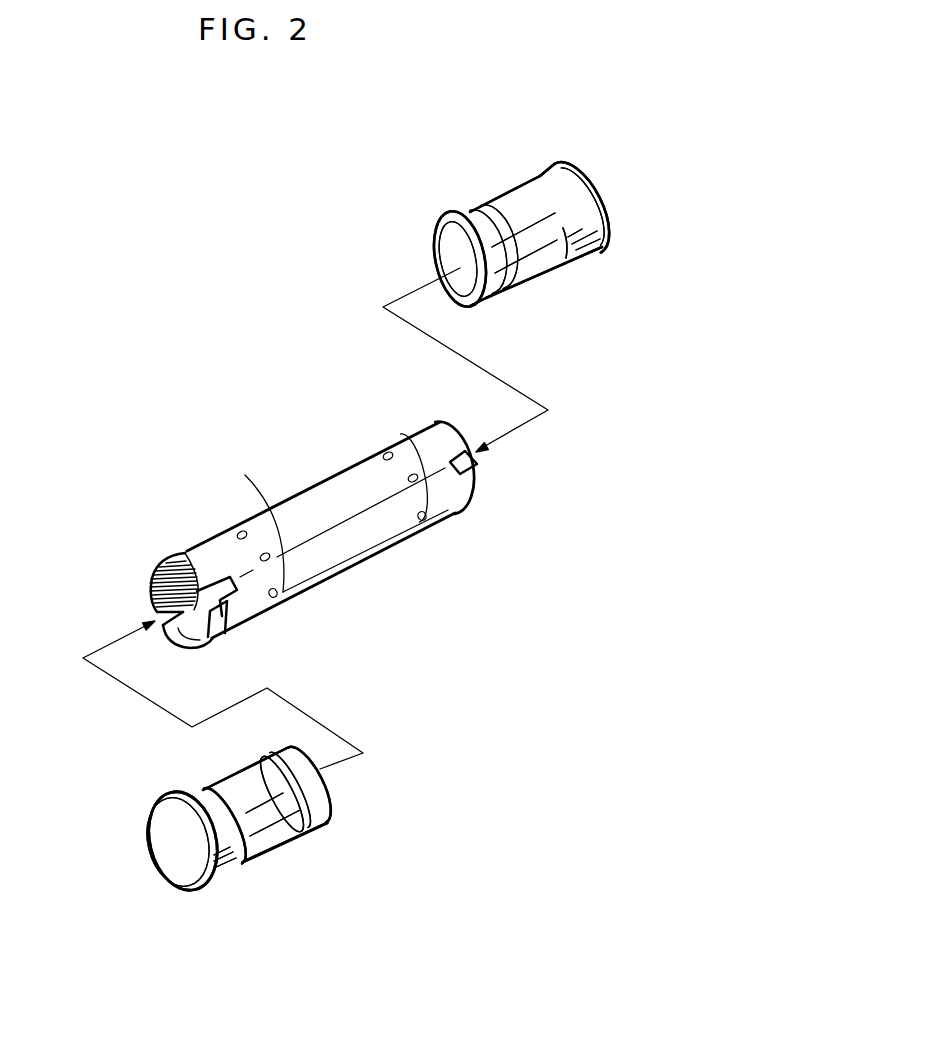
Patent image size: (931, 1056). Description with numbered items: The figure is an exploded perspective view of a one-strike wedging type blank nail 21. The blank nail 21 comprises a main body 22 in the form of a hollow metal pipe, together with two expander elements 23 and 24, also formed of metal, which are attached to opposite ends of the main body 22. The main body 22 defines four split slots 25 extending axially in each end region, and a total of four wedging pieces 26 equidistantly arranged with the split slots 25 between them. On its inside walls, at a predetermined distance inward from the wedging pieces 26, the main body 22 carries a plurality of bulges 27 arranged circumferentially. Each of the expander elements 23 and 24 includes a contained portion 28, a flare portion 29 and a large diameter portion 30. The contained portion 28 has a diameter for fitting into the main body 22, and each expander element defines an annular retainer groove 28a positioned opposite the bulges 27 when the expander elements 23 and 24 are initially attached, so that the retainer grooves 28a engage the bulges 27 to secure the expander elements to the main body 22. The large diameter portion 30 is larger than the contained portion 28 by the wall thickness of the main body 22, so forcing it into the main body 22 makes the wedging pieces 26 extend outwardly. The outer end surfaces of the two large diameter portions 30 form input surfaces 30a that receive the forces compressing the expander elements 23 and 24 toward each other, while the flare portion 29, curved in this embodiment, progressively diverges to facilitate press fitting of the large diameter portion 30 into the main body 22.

The blank nail 21 is at (190, 367).
The main body 22 is at (312, 480).
The expander element 23 is at (160, 800).
The expander element 24 is at (511, 184).
The split slots 25 is at (407, 434).
The wedging pieces 26 is at (478, 466).
The bulges 27 is at (412, 475).
The contained portion 28 is at (537, 277).
The annular retainer grooves 28a is at (507, 287).
The flare portion 29 is at (566, 259).
The large diameter portion 30 is at (598, 249).
The input surfaces 30a is at (602, 191).